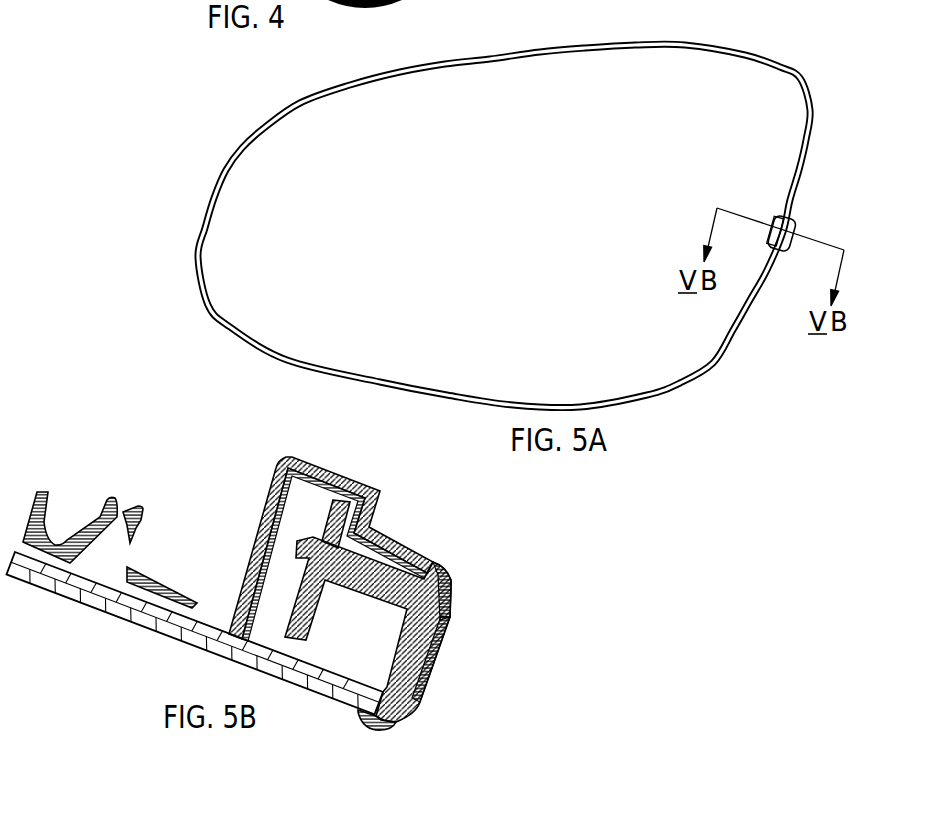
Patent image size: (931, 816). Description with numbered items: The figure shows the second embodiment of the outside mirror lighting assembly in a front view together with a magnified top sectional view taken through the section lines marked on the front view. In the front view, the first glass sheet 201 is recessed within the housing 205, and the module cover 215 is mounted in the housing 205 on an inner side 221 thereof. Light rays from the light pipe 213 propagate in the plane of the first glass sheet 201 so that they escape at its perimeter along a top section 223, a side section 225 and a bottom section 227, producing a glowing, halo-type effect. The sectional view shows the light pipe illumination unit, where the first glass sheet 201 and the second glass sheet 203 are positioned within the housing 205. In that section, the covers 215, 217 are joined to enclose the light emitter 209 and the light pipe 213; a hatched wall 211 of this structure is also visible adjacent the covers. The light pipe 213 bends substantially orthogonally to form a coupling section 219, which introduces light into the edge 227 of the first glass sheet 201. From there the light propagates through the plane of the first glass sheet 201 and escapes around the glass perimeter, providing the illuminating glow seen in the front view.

In FIG. 5A, the first glass sheet 201 is at (597, 95).
In FIG. 5B, the first glass sheet 201 is at (128, 627).
In FIG. 5B, the second glass sheet 203 is at (200, 617).
In FIG. 5A, the housing 205 is at (687, 45).
In FIG. 5B, the housing 205 is at (88, 518).
In FIG. 5B, the light emitter 209 is at (290, 553).
In FIG. 5B, the frame wall 211 is at (263, 513).
In FIG. 5B, the light pipe 213 is at (382, 558).
In FIG. 5A, the module cover 215 is at (803, 220).
In FIG. 5B, the module cover 215 is at (427, 563).
In FIG. 5B, the cover 217 is at (317, 465).
In FIG. 5B, the coupling section 219 is at (438, 652).
In FIG. 5A, the inner side 221 is at (810, 143).
In FIG. 5A, the top section 223 is at (548, 48).
In FIG. 5A, the side section 225 is at (208, 212).
In FIG. 5A, the bottom section 227 is at (462, 403).
In FIG. 5B, the bottom section 227 is at (400, 717).